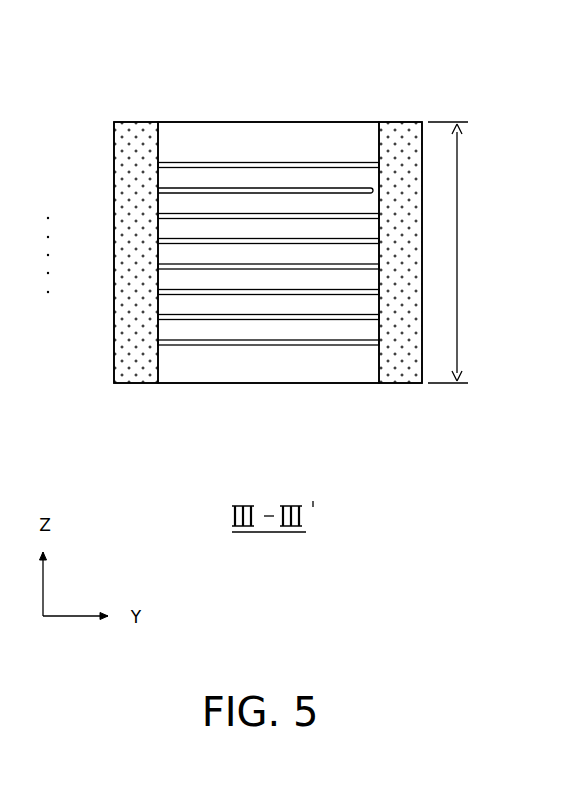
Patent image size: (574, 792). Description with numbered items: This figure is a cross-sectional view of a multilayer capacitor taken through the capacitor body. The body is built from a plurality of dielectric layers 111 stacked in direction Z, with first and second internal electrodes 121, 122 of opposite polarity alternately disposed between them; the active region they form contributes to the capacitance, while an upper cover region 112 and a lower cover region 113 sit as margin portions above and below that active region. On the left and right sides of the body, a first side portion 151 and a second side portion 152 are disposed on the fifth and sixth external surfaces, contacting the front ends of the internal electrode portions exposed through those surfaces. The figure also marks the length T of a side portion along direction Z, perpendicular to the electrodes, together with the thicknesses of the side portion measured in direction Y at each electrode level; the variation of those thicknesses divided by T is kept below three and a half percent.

The dielectric layers 111 is at (332, 175).
The upper cover region 112 is at (297, 135).
The lower cover region 113 is at (262, 370).
The first internal electrode 121 is at (210, 155).
The second internal electrode 122 is at (277, 185).
The first side portion 151 is at (135, 122).
The second side portion 152 is at (398, 130).
The length of side portion T is at (455, 252).